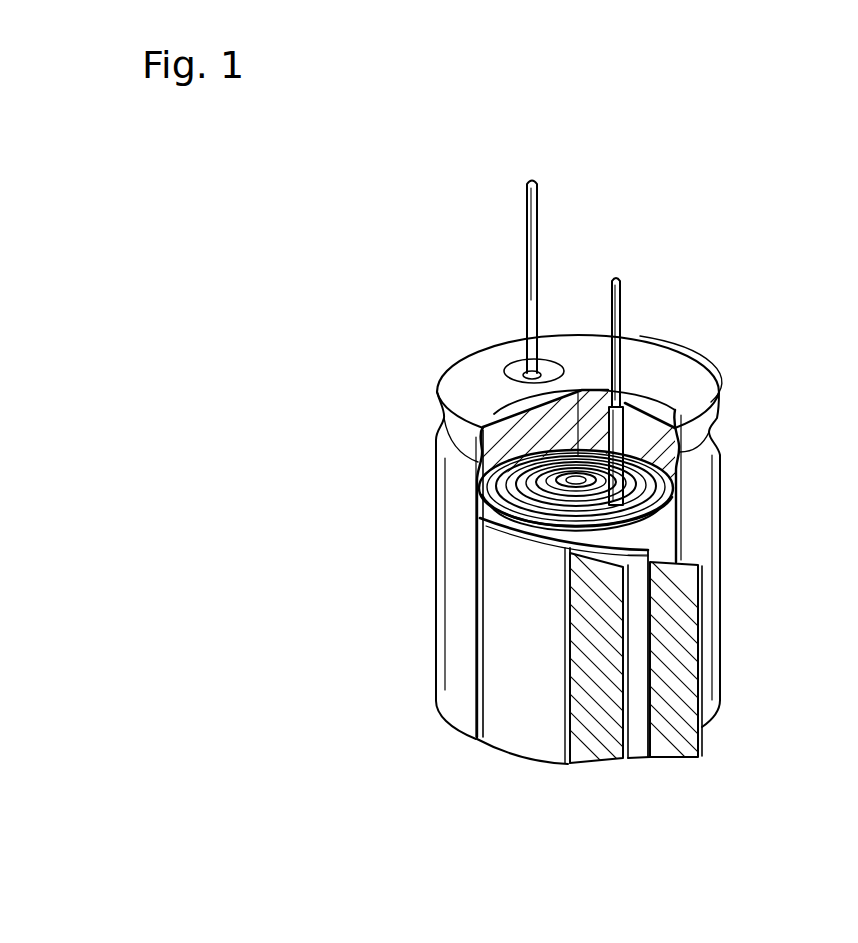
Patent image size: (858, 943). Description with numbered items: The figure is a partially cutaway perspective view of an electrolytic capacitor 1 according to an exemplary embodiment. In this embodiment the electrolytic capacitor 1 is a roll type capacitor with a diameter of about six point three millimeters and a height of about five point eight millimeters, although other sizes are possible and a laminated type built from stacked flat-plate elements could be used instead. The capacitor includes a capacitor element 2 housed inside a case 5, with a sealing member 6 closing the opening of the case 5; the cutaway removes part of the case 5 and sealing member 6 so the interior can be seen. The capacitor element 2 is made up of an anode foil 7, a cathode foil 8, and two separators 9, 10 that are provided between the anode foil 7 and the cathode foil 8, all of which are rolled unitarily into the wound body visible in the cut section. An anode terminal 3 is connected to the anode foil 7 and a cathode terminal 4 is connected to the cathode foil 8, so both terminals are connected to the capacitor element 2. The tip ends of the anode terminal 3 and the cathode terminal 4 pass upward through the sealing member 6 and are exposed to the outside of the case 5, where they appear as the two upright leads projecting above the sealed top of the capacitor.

The electrolytic capacitor 1 is at (772, 253).
The capacitor element 2 is at (660, 535).
The anode terminal 3 is at (530, 237).
The cathode terminal 4 is at (620, 305).
The case 5 is at (700, 497).
The sealing member 6 is at (510, 453).
The anode foil 7 is at (593, 740).
The cathode foil 8 is at (678, 738).
The separator 9 is at (517, 733).
The separator 10 is at (638, 738).